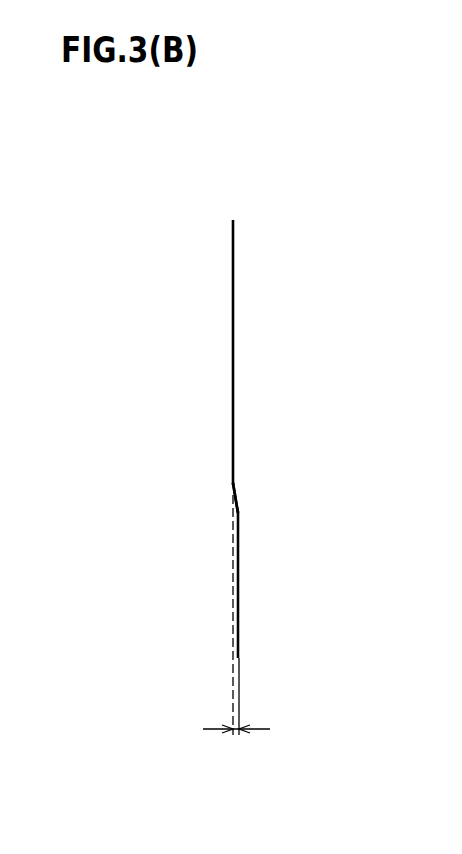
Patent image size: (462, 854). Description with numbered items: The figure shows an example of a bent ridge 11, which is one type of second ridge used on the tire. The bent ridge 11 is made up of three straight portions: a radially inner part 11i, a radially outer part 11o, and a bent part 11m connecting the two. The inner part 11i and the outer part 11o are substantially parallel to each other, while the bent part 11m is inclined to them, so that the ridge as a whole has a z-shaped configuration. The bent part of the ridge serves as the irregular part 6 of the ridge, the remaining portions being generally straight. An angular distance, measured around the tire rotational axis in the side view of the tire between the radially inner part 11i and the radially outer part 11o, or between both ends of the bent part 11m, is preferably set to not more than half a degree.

The bent ridge 11 is at (304, 490).
The radially outer part 11o is at (233, 350).
The bent part 11m is at (231, 499).
The radially inner part 11i is at (288, 584).
The irregular part 6 is at (222, 500).